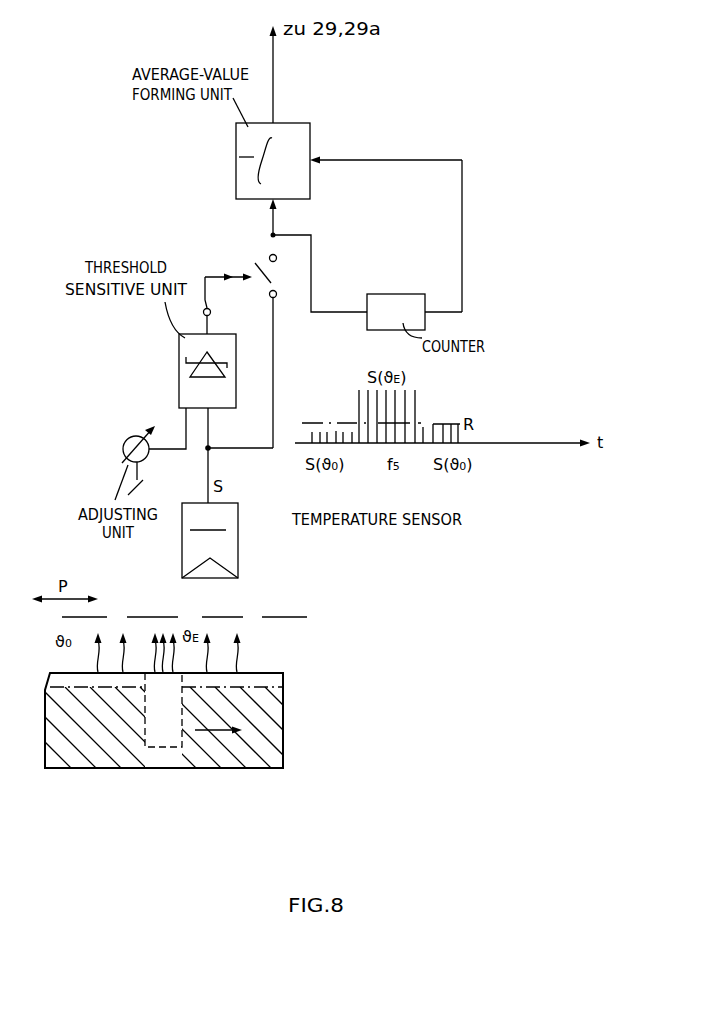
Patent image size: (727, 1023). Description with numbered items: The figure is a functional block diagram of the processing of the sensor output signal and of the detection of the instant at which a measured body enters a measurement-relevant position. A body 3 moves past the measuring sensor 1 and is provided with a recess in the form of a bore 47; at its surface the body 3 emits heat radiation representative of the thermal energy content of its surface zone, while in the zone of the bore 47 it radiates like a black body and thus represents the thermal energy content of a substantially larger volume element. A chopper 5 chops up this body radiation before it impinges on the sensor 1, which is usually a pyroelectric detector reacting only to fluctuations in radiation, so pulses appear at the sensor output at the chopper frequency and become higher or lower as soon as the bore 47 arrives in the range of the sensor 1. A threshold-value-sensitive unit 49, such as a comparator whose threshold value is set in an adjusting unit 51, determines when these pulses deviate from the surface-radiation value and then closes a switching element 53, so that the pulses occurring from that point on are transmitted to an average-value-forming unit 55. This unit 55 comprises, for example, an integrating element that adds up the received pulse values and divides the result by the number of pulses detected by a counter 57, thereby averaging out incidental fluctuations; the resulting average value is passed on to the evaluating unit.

The sensor 1 is at (238, 527).
The body 3 is at (265, 727).
The chopper 5 is at (281, 621).
The bore 47 is at (145, 727).
The threshold-value-sensitive unit 49 is at (179, 368).
The adjusting unit 51 is at (123, 449).
The switching element 53 is at (284, 274).
The average-value-forming unit 55 is at (312, 137).
The counter 57 is at (393, 293).